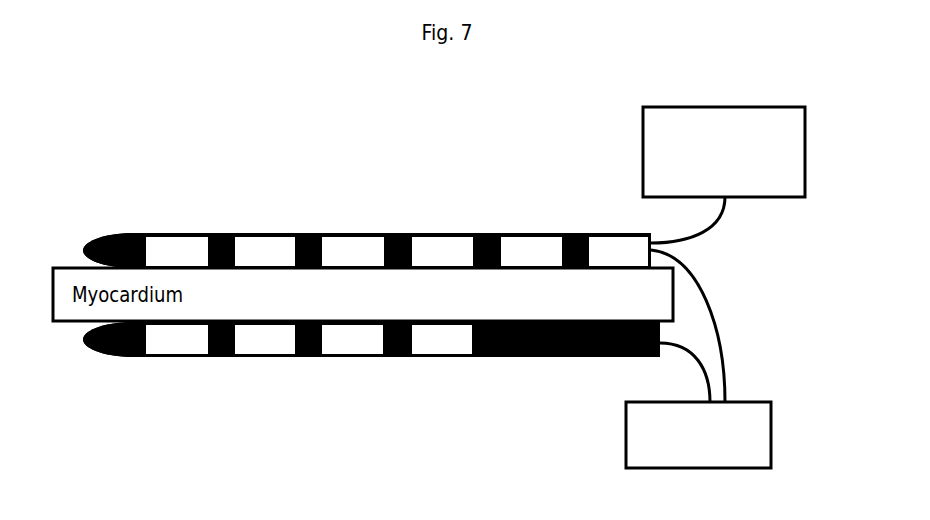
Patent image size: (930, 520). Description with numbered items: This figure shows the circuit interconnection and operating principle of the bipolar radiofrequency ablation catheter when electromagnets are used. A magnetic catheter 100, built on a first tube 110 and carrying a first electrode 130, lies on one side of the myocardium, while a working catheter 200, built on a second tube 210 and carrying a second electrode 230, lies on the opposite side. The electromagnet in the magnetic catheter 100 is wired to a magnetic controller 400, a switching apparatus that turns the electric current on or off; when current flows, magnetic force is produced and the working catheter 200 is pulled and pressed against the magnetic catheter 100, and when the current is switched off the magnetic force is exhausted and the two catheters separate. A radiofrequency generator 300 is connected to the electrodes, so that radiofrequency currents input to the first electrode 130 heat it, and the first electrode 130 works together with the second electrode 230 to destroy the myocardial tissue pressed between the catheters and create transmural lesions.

The magnetic catheter 100 is at (337, 203).
The first tube 110 is at (125, 233).
The first electrode 130 is at (275, 231).
The working catheter 200 is at (342, 386).
The second tube 210 is at (133, 360).
The second electrode 230 is at (185, 359).
The radiofrequency generator 300 is at (698, 378).
The magnetic controller 400 is at (724, 150).